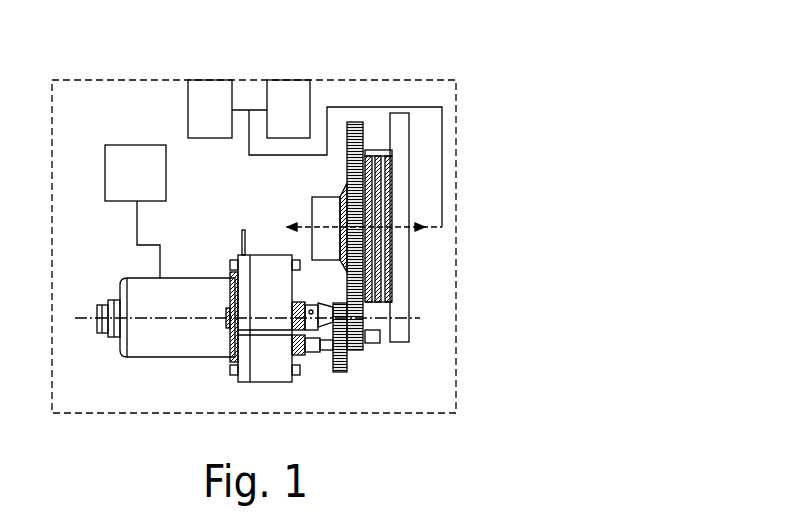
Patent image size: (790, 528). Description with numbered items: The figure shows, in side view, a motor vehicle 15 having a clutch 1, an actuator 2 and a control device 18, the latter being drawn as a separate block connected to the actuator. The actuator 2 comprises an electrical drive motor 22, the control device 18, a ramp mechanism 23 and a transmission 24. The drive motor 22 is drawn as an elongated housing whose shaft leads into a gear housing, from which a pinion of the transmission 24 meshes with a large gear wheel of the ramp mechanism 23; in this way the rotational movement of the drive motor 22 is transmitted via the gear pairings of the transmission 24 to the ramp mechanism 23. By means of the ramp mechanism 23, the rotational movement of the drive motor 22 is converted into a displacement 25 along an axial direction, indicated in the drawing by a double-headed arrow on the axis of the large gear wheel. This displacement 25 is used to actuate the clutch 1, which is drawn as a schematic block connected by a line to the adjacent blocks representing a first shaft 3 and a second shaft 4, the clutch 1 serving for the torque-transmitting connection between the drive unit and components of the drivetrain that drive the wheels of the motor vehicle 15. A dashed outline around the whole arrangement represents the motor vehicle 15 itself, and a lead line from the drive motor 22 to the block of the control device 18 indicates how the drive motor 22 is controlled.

The clutch 1 is at (250, 108).
The actuator 2 is at (249, 396).
The first shaft 3 is at (207, 95).
The second shaft 4 is at (296, 95).
The motor vehicle 15 is at (430, 80).
The control device 18 is at (136, 150).
The drive motor 22 is at (172, 286).
The ramp mechanism 23 is at (374, 130).
The transmission 24 is at (356, 362).
The displacement 25 is at (371, 243).